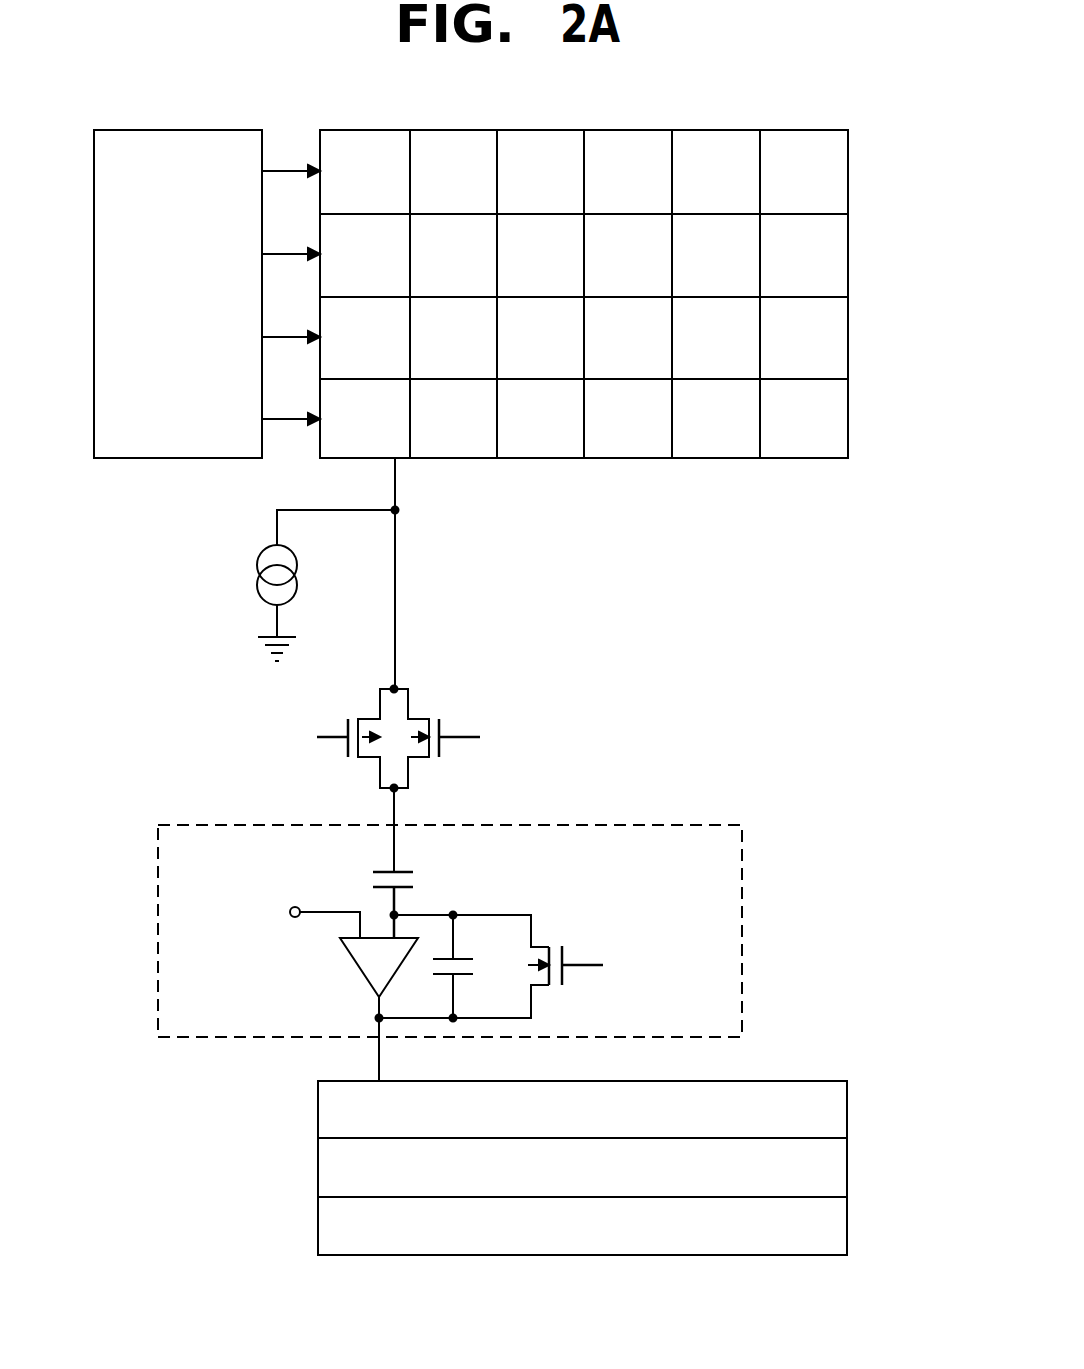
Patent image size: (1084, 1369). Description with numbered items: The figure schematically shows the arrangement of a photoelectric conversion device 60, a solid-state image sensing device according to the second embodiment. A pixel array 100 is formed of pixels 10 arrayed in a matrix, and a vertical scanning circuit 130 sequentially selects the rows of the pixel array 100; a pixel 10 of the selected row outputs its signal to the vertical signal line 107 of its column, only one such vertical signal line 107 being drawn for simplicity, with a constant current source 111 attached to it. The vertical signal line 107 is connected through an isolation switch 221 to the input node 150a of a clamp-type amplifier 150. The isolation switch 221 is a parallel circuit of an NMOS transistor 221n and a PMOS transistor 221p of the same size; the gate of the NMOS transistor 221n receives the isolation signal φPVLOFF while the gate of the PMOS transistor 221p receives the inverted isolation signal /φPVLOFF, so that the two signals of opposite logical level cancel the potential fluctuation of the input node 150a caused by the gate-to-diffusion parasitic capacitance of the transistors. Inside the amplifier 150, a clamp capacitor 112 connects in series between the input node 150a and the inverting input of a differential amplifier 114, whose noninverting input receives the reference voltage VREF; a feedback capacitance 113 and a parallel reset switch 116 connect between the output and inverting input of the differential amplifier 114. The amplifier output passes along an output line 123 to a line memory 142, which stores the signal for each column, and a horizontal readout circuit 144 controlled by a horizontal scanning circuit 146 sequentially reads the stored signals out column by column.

The pixel 10 is at (804, 156).
The pixel array 100 is at (855, 130).
The vertical scanning circuit 130 is at (218, 129).
The vertical signal line 107 is at (397, 553).
The constant current source 111 is at (256, 578).
The isolation switch 221 is at (440, 690).
The PMOS transistor 221p is at (358, 758).
The NMOS transistor 221n is at (429, 758).
The input node 150a is at (396, 805).
The amplifier 150 is at (157, 870).
The clamp capacitor 112 is at (418, 880).
The differential amplifier 114 is at (354, 968).
The feedback capacitance 113 is at (460, 956).
The reset switch 116 is at (553, 945).
The output line 123 is at (381, 1062).
The line memory 142 is at (317, 1110).
The horizontal readout circuit 144 is at (317, 1167).
The horizontal scanning circuit 146 is at (317, 1227).
The photoelectric conversion device 60 is at (533, 1315).